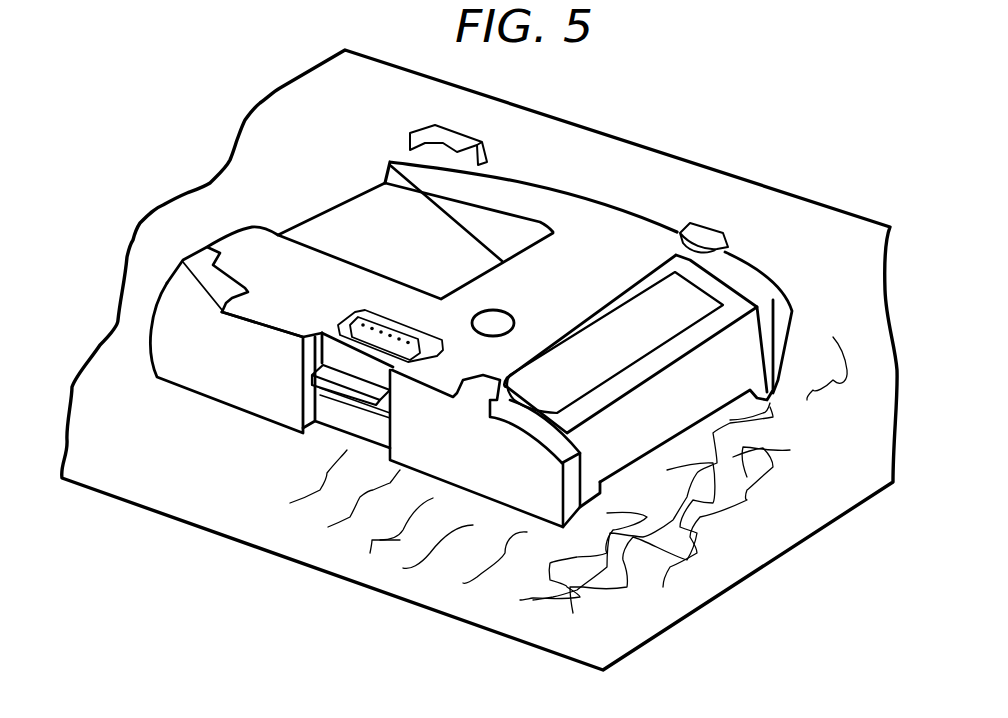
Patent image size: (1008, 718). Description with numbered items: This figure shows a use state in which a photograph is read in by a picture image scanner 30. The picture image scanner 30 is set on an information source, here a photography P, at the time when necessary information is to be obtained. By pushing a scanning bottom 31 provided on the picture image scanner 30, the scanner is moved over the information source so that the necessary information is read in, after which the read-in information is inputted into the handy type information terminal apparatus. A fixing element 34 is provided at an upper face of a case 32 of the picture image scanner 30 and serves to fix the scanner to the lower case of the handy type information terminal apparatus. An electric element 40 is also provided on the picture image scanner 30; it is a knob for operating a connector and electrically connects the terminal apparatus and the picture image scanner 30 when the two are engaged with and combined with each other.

The cassette body 30 is at (253, 400).
The hole 31 is at (515, 320).
The side wall block 32 is at (190, 372).
The engaging claw 34 is at (203, 280).
The plate 40 is at (345, 388).
The paper sheet P is at (700, 610).